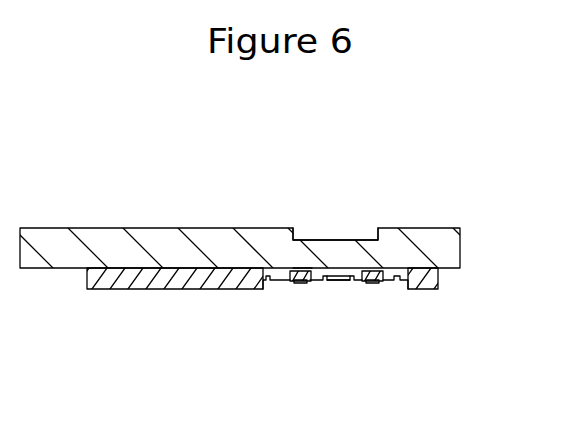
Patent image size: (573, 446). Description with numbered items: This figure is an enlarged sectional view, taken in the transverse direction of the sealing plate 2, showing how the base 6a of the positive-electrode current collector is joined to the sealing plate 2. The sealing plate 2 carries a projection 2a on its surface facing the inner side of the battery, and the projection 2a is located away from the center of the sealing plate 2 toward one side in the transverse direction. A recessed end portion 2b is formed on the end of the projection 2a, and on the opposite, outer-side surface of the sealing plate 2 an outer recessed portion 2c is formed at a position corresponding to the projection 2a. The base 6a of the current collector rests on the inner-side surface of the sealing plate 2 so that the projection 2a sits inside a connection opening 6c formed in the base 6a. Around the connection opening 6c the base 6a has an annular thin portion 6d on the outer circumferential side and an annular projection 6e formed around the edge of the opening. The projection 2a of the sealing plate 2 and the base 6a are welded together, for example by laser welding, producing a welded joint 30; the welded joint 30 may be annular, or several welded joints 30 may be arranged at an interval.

The sealing plate 2 is at (82, 253).
The projection 2a is at (327, 280).
The recessed end portion 2b is at (345, 280).
The outer recessed portion 2c is at (370, 240).
The base 6a is at (142, 281).
The connection opening 6c is at (297, 268).
The annular thin portion 6d is at (274, 280).
The annular projection 6e is at (289, 281).
The welded joint 30 is at (302, 283).